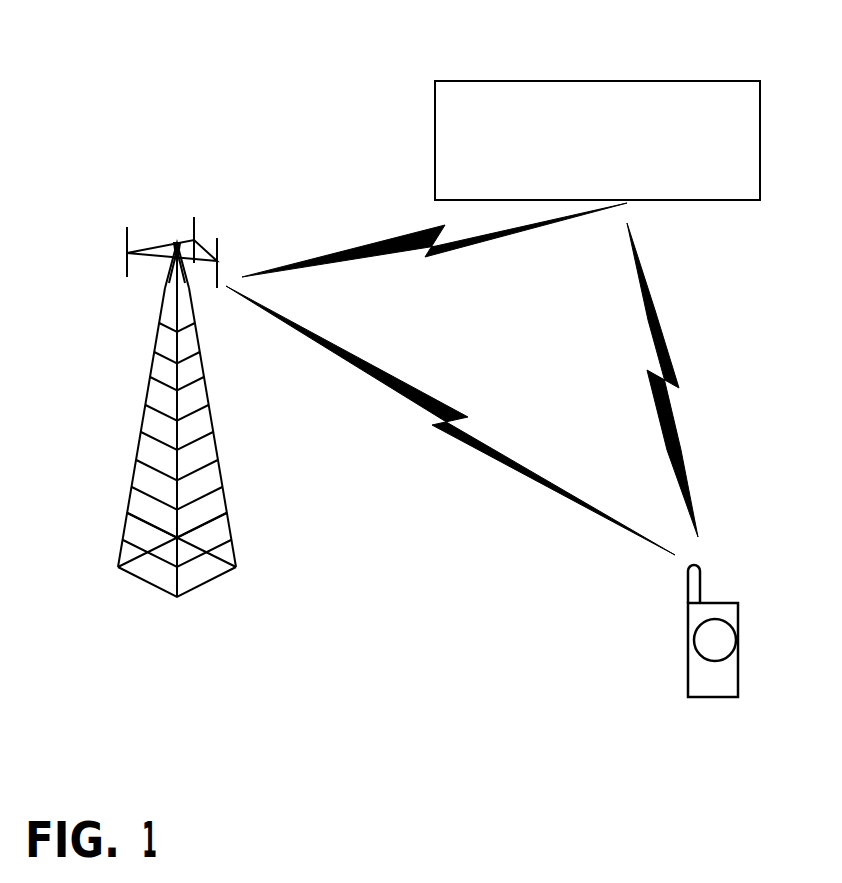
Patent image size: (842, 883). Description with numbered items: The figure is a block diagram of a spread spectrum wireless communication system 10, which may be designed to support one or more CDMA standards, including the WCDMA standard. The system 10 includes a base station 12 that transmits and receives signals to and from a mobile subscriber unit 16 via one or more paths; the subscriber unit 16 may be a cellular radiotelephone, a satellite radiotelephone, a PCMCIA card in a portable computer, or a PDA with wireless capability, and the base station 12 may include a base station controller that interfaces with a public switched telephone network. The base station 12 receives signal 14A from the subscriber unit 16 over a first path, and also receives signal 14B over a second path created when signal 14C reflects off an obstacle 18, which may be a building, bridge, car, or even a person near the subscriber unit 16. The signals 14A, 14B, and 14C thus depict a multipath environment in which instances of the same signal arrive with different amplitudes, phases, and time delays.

The spread spectrum wireless communication system 10 is at (214, 76).
The base station 12 is at (237, 545).
The signal 14A is at (357, 360).
The signal 14B is at (380, 242).
The signal 14C is at (640, 270).
The mobile subscriber unit 16 is at (757, 591).
The obstacle 18 is at (612, 167).